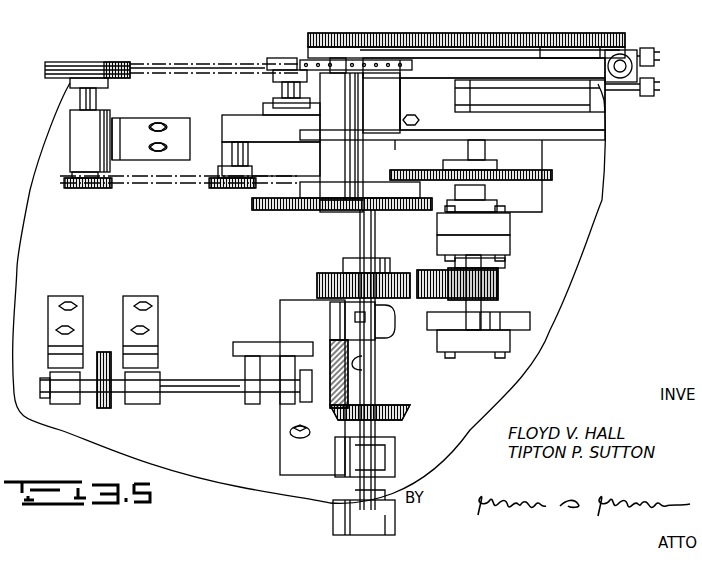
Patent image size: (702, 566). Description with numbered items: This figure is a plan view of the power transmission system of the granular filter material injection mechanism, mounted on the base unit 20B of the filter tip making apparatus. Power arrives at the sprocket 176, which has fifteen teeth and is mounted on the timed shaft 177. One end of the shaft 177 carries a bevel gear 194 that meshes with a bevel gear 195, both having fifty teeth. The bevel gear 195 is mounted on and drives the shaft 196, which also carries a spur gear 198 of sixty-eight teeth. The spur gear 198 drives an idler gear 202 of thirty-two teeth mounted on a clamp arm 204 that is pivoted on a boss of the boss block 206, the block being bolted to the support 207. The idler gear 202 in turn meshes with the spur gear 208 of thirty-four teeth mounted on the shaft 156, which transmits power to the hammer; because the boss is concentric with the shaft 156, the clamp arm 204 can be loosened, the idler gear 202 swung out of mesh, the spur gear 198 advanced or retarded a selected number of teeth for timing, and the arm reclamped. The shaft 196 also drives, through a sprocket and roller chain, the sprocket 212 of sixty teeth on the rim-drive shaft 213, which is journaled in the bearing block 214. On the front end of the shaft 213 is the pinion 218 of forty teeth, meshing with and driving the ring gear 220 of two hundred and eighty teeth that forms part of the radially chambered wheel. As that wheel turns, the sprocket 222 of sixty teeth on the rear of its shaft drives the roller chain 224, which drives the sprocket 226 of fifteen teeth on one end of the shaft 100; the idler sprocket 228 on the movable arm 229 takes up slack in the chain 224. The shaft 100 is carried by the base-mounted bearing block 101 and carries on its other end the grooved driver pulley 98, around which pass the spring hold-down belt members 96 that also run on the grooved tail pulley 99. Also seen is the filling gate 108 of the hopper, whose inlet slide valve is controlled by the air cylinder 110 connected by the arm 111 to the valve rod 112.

The base unit 20B is at (590, 190).
The grooved driver pulley 98 is at (112, 64).
The hold-down belt members 96 is at (236, 62).
The grooved tail pulley 99 is at (286, 58).
The shaft 100 is at (92, 97).
The bearing block 101 is at (130, 144).
The sprocket 226 is at (100, 190).
The roller chain 224 is at (142, 182).
The idler sprocket 228 is at (230, 186).
The movable arm 229 is at (238, 118).
The pinion 218 is at (350, 48).
The ring gear 220 is at (540, 40).
The rim-drive shaft 213 is at (345, 72).
The bearing block 214 is at (358, 150).
The air cylinder 110 is at (452, 99).
The filling gate 108 is at (628, 52).
The valve rod 112 is at (650, 66).
The arm 111 is at (652, 86).
The roller chain sprocket 222 is at (556, 178).
The sprocket 212 is at (266, 210).
The spur gear 198 is at (332, 275).
The idler gear 202 is at (430, 272).
The shaft 156 is at (478, 258).
The support 207 is at (500, 268).
The spur gear 208 is at (492, 287).
The clamp arm 204 is at (514, 314).
The boss block 206 is at (512, 332).
The bevel gear 194 is at (330, 342).
The shaft 196 is at (370, 369).
The bevel gear 195 is at (392, 406).
The sprocket 176 is at (90, 360).
The shaft 177 is at (182, 382).